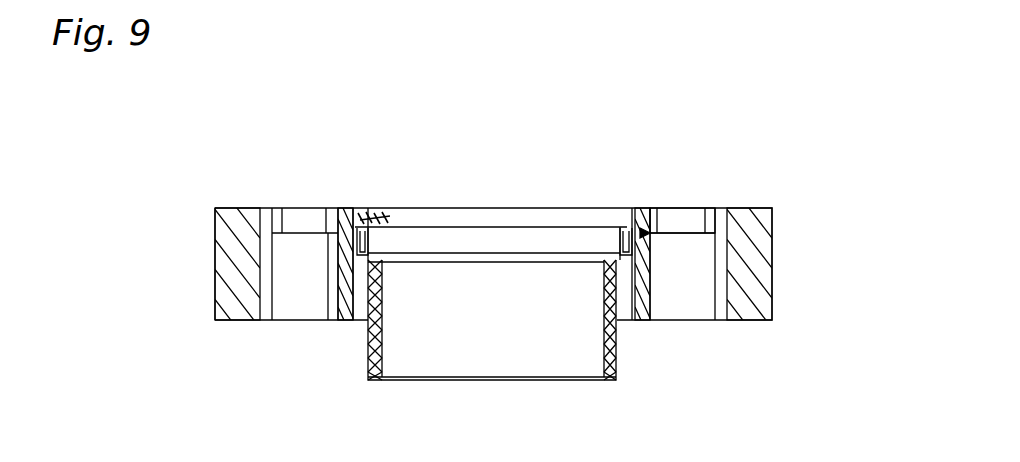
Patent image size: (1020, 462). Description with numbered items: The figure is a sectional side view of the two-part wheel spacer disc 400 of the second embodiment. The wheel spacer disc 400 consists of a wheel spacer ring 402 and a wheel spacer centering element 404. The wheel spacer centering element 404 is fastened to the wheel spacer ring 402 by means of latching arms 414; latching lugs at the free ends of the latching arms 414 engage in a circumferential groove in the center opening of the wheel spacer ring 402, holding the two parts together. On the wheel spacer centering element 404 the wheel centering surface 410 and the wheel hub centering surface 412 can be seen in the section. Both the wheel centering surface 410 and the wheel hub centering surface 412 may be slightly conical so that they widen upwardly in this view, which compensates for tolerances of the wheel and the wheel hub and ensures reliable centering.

The wheel spacer disc 400 is at (777, 220).
The wheel spacer ring 402 is at (677, 213).
The wheel spacer centering element 404 is at (635, 204).
The wheel centering surface 410 is at (620, 348).
The wheel hub centering surface 412 is at (379, 240).
The latching arms 414 is at (352, 255).